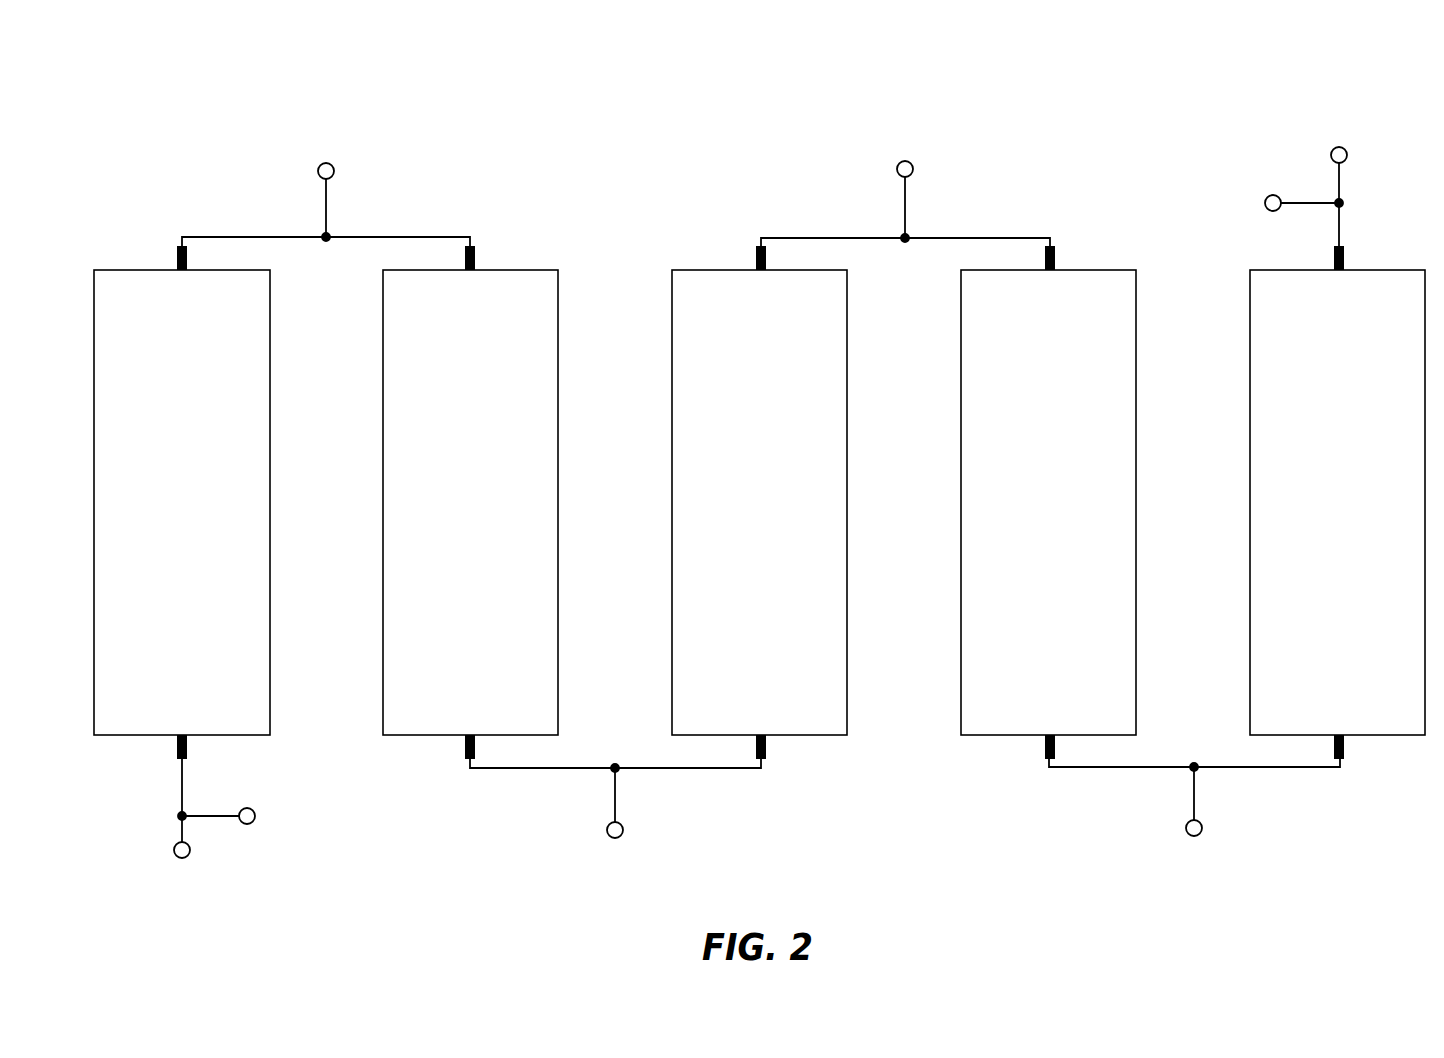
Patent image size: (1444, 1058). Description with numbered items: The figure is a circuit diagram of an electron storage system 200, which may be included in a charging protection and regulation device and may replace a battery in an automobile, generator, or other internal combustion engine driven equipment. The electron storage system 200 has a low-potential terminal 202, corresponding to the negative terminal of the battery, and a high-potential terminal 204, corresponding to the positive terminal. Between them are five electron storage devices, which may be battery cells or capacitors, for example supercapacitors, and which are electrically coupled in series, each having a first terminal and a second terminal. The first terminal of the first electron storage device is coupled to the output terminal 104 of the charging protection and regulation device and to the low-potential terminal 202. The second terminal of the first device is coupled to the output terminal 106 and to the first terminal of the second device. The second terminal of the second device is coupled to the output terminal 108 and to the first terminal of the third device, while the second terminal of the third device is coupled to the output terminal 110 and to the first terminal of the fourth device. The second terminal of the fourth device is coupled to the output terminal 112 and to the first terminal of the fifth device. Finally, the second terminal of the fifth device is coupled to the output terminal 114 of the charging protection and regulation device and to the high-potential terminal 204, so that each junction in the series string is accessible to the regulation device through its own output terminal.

The electron storage system 200 is at (1310, 84).
The output terminal 106 is at (334, 170).
The output terminal 110 is at (913, 169).
The output terminal 108 is at (623, 830).
The output terminal 112 is at (1202, 828).
The output terminal 104 is at (255, 815).
The low-potential terminal 202 is at (175, 849).
The high-potential terminal 204 is at (1346, 151).
The output terminal 114 is at (1268, 198).